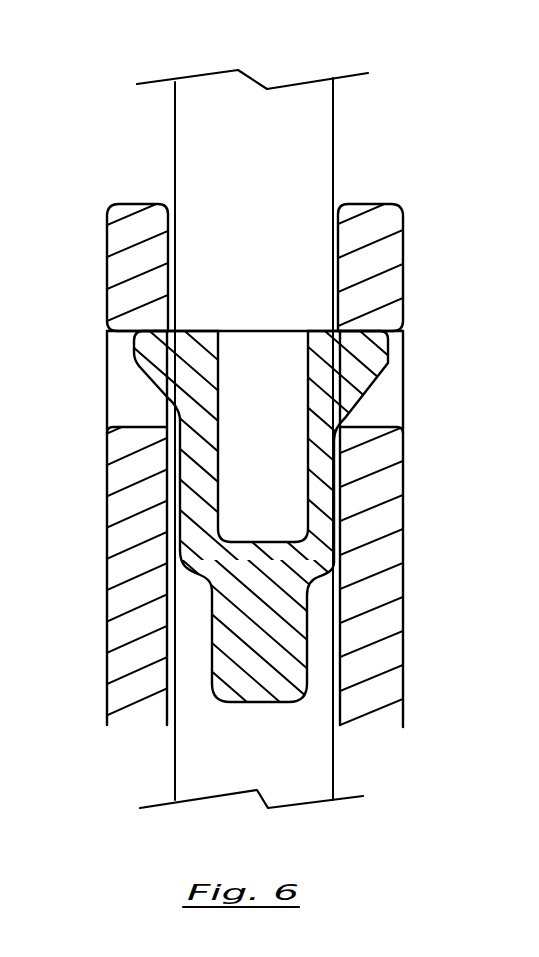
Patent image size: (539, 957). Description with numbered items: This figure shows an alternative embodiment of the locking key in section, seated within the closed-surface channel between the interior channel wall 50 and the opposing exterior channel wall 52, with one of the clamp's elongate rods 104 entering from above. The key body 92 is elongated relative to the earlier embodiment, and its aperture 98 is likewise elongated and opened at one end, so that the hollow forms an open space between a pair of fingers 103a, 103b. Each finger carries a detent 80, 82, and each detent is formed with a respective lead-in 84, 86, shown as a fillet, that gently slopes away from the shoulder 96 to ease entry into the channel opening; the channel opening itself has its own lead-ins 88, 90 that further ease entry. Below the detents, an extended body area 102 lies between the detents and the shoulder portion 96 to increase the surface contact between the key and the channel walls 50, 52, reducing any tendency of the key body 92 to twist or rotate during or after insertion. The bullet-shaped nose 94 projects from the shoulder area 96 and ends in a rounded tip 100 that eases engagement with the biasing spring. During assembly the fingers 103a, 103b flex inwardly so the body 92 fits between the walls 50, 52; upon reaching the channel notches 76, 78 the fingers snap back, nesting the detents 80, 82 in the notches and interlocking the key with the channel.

The interior channel wall 50 is at (107, 572).
The exterior channel wall 52 is at (403, 587).
The channel notch 76 is at (45, 300).
The channel notch 78 is at (455, 373).
The detent 80 is at (135, 353).
The detent 82 is at (385, 344).
The lead-in 84 is at (167, 378).
The lead-in 86 is at (365, 383).
The lead-in 88 is at (168, 198).
The lead-in 90 is at (343, 203).
The key body 92 is at (221, 551).
The bullet-shaped nose 94 is at (210, 622).
The shoulder 96 is at (197, 575).
The aperture 98 is at (255, 300).
The tip 100 is at (250, 703).
The extended body area 102 is at (336, 516).
The finger 103a is at (181, 462).
The finger 103b is at (328, 482).
The elongate rod 104 is at (337, 100).